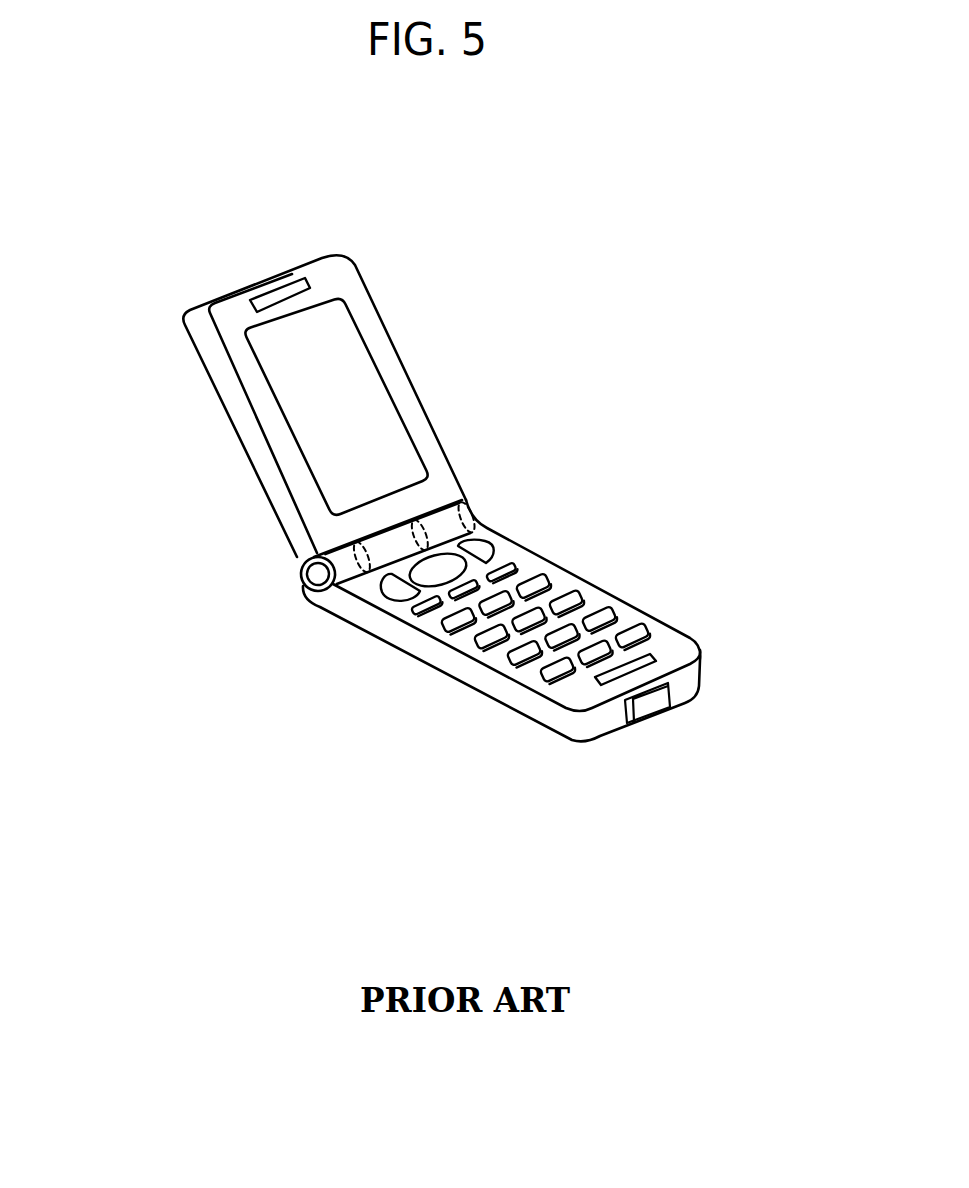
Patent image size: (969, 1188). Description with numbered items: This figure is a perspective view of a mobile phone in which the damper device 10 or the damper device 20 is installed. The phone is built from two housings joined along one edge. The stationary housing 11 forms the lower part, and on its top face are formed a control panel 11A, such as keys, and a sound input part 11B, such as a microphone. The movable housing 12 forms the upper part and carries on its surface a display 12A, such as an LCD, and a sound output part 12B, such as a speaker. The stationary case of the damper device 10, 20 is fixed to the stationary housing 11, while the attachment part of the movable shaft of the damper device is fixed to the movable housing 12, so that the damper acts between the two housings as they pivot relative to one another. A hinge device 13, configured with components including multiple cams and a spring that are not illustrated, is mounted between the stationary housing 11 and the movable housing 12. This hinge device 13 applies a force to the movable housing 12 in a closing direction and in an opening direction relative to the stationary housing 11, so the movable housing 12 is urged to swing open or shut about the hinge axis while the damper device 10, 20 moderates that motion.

The damper device 10 is at (465, 503).
The damper device 20 is at (540, 424).
The stationary housing 11 is at (453, 667).
The control panel 11A is at (607, 613).
The sound input part 11B is at (648, 657).
The movable housing 12 is at (357, 272).
The display 12A is at (308, 393).
The sound output part 12B is at (253, 307).
The hinge device 13 is at (313, 585).